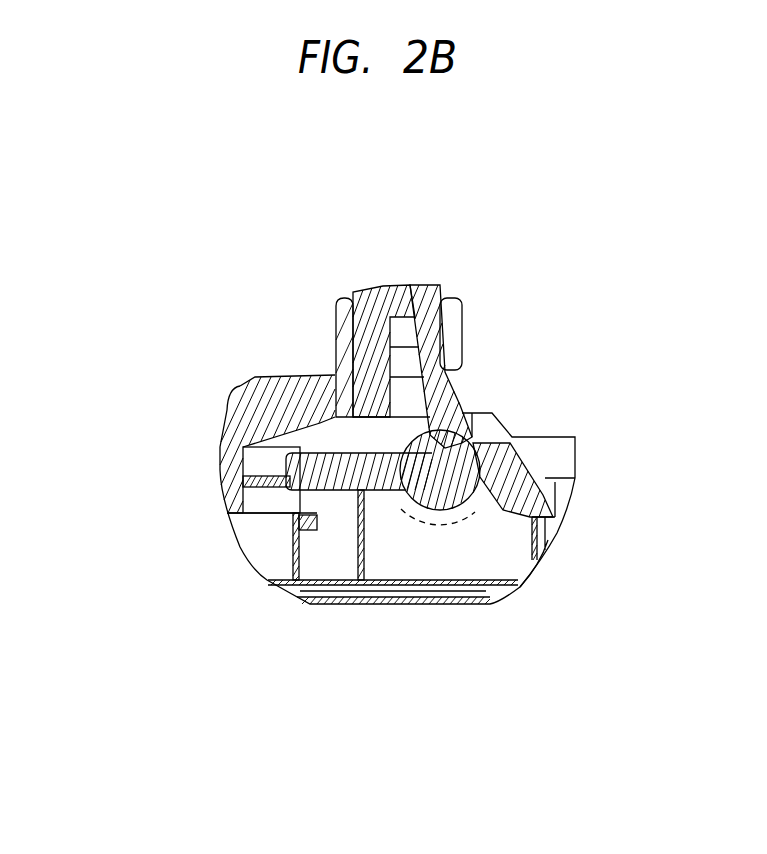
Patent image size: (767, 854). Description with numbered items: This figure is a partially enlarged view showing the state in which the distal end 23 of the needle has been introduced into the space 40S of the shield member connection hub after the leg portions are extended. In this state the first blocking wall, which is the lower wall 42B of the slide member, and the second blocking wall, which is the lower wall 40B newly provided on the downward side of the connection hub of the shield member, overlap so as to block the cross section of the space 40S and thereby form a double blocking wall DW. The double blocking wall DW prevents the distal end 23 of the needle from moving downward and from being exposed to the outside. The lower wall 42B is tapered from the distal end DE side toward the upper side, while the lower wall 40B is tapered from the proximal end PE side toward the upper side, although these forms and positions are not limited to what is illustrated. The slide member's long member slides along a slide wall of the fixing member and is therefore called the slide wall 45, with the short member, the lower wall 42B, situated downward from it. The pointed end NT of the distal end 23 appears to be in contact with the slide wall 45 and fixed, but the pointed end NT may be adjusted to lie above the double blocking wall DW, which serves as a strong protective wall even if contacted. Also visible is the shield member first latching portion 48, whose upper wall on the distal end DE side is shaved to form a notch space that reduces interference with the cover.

The distal end 23 is at (403, 314).
The pointed end NT is at (428, 430).
The slide wall 45 is at (458, 405).
The space 40S is at (410, 437).
The shield member first latching portion 48 is at (342, 477).
The distal end side DE is at (128, 522).
The proximal end side PE is at (640, 499).
The lower wall 40B is at (402, 482).
The double blocking wall DW is at (424, 518).
The lower wall 42B is at (465, 506).